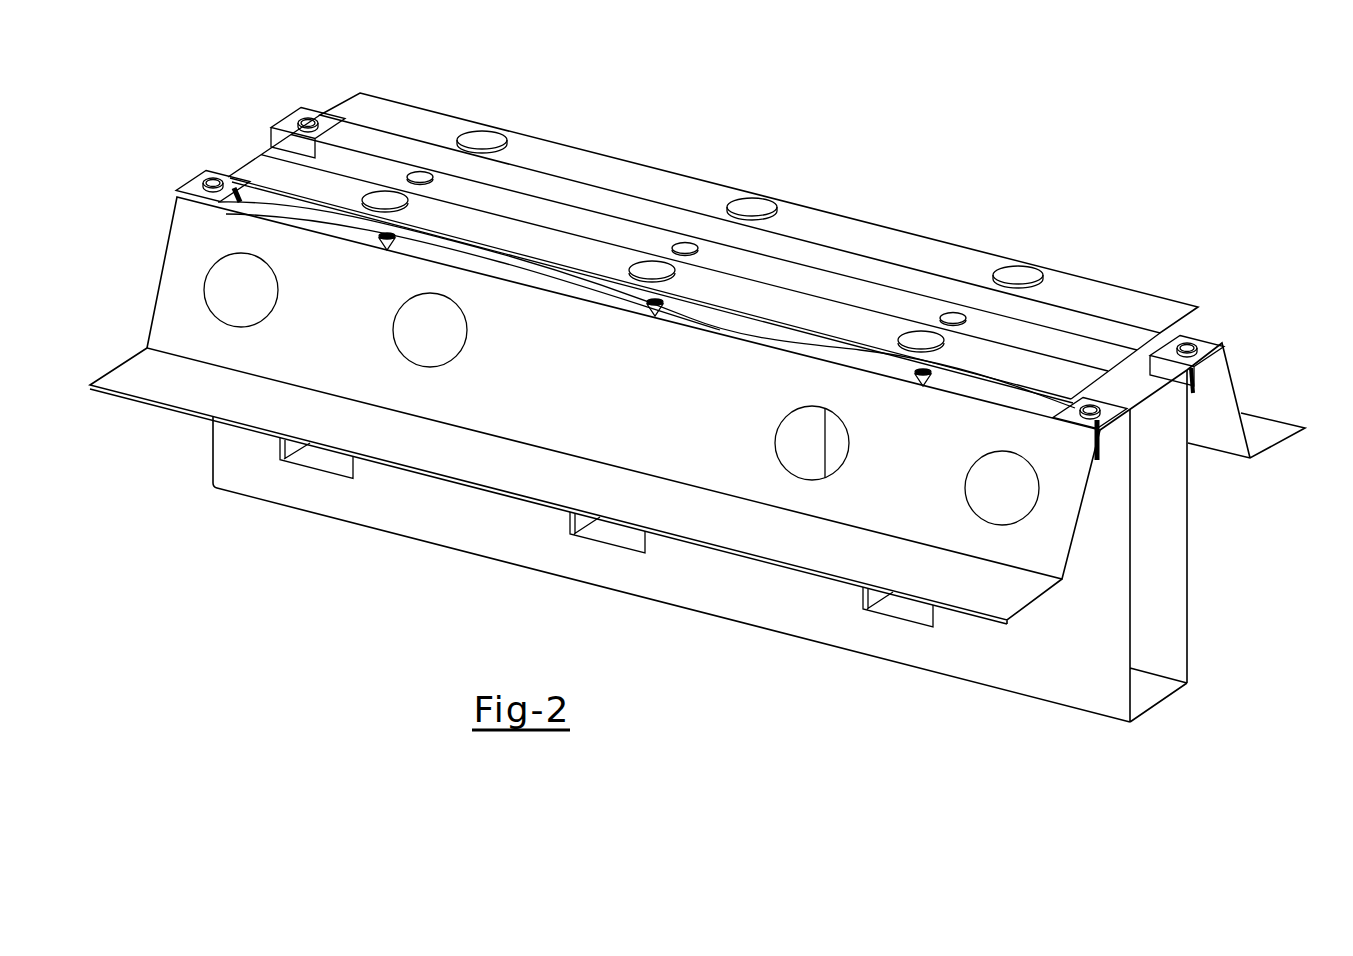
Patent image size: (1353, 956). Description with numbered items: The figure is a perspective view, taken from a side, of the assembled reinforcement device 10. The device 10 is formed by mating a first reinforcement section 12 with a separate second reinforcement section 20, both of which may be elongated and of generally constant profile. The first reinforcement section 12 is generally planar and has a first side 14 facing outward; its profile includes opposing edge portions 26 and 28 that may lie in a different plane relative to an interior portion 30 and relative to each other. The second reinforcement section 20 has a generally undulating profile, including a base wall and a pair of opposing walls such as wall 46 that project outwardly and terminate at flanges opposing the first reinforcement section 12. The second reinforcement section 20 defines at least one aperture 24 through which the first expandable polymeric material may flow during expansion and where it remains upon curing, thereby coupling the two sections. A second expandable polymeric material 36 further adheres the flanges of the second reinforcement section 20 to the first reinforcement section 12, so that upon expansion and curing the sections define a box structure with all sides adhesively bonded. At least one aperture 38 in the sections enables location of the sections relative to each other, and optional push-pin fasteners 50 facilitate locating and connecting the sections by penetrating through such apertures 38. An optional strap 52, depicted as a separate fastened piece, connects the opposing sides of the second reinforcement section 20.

The reinforcement device 10 is at (903, 124).
The first reinforcement section 12 is at (398, 117).
The first side 14 is at (745, 310).
The second reinforcement section 20 is at (476, 389).
The aperture 24 is at (420, 332).
The edge portion 26 is at (1021, 358).
The edge portion 28 is at (1104, 290).
The interior portion 30 is at (530, 203).
The second expandable polymeric material 36 is at (270, 200).
The aperture 38 is at (895, 353).
The opposing wall 46 is at (1033, 661).
The push-pin fastener 50 is at (752, 206).
The strap 52 is at (278, 147).